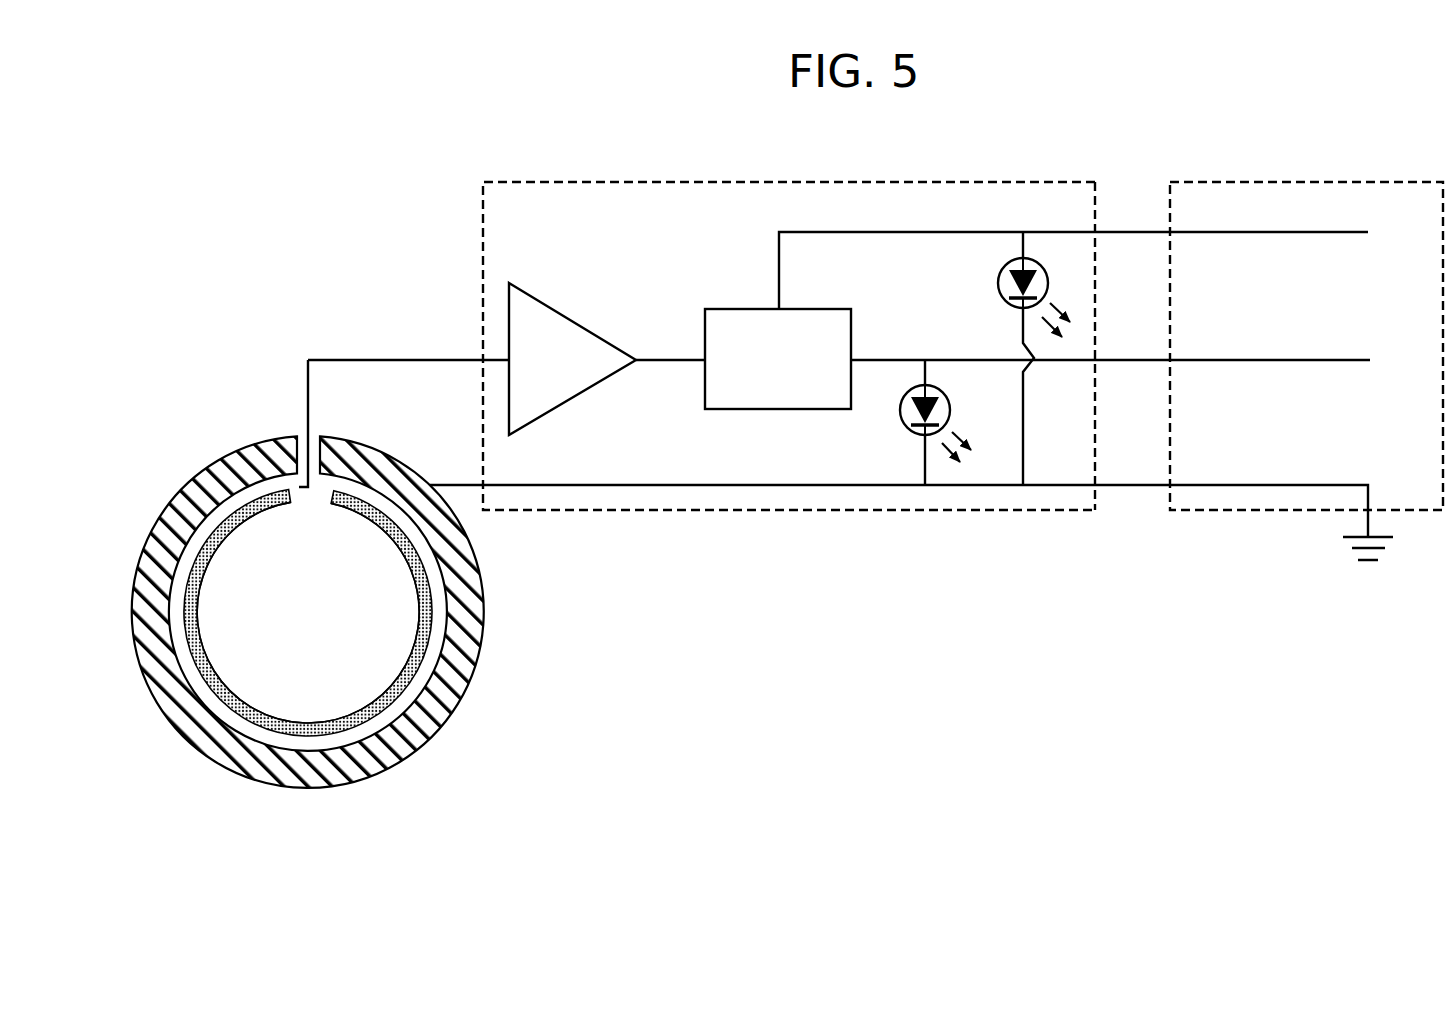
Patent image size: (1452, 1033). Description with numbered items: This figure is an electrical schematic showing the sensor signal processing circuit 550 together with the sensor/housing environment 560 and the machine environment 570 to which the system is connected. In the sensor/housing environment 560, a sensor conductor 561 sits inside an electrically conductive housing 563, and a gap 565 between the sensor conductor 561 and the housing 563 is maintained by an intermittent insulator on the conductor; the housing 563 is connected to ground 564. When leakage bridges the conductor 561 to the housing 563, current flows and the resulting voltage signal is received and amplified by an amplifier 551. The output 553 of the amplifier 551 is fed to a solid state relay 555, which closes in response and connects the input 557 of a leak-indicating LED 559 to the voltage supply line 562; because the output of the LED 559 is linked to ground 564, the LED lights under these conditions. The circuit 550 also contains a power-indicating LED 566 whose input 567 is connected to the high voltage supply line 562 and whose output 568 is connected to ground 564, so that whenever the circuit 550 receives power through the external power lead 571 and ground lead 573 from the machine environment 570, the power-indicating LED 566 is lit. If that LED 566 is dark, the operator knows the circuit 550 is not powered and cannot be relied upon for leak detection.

The sensor signal processing circuit 550 is at (585, 175).
The amplifier 551 is at (543, 327).
The output of the amplifier 553 is at (658, 353).
The solid state relay 555 is at (808, 322).
The input of leak-indicating LED 557 is at (925, 372).
The leak-indicating LED 559 is at (902, 410).
The sensor/housing environment 560 is at (397, 540).
The sensor conductor 561 is at (423, 628).
The voltage supply line 562 is at (937, 248).
The housing 563 is at (468, 652).
The ground 564 is at (977, 488).
The gap 565 is at (393, 707).
The power-indicating LED 566 is at (1008, 279).
The input of power-indicating LED 567 is at (1023, 243).
The output of power-indicating LED 568 is at (1094, 412).
The machine environment 570 is at (1202, 180).
The external power lead 571 is at (1122, 245).
The ground lead 573 is at (1118, 358).